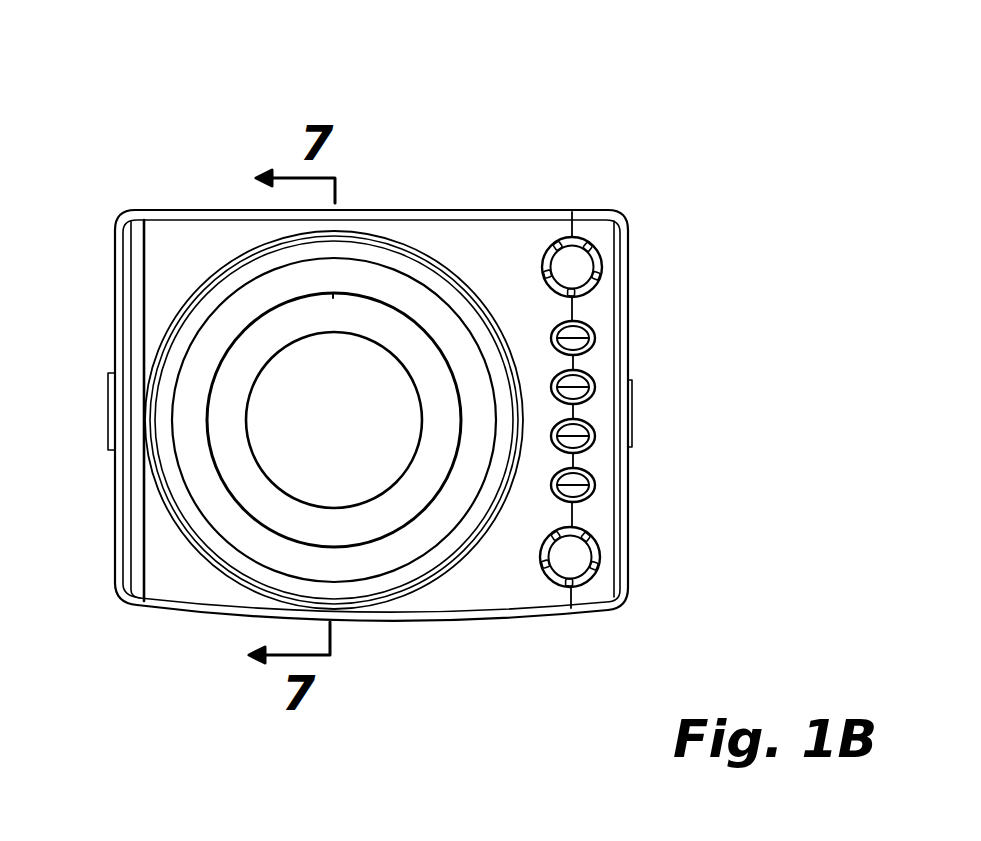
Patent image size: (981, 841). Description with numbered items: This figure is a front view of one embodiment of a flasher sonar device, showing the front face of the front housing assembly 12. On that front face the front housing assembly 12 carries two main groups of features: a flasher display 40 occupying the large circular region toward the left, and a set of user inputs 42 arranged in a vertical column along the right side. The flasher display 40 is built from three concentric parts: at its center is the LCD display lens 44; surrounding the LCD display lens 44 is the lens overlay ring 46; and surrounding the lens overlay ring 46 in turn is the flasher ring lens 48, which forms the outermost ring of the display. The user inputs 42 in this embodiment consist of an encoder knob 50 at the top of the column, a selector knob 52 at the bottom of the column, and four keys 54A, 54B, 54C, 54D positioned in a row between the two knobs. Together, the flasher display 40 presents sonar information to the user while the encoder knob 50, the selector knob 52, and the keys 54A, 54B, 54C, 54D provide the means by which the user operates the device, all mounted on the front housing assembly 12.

The front housing assembly 12 is at (393, 621).
The flasher display 40 is at (193, 548).
The user inputs 42 is at (577, 204).
The LCD display lens 44 is at (355, 377).
The lens overlay ring 46 is at (295, 323).
The flasher ring lens 48 is at (183, 418).
The encoder knob 50 is at (585, 246).
The selector knob 52 is at (597, 552).
The key 54A is at (593, 340).
The key 54B is at (593, 389).
The key 54C is at (593, 437).
The key 54D is at (593, 492).